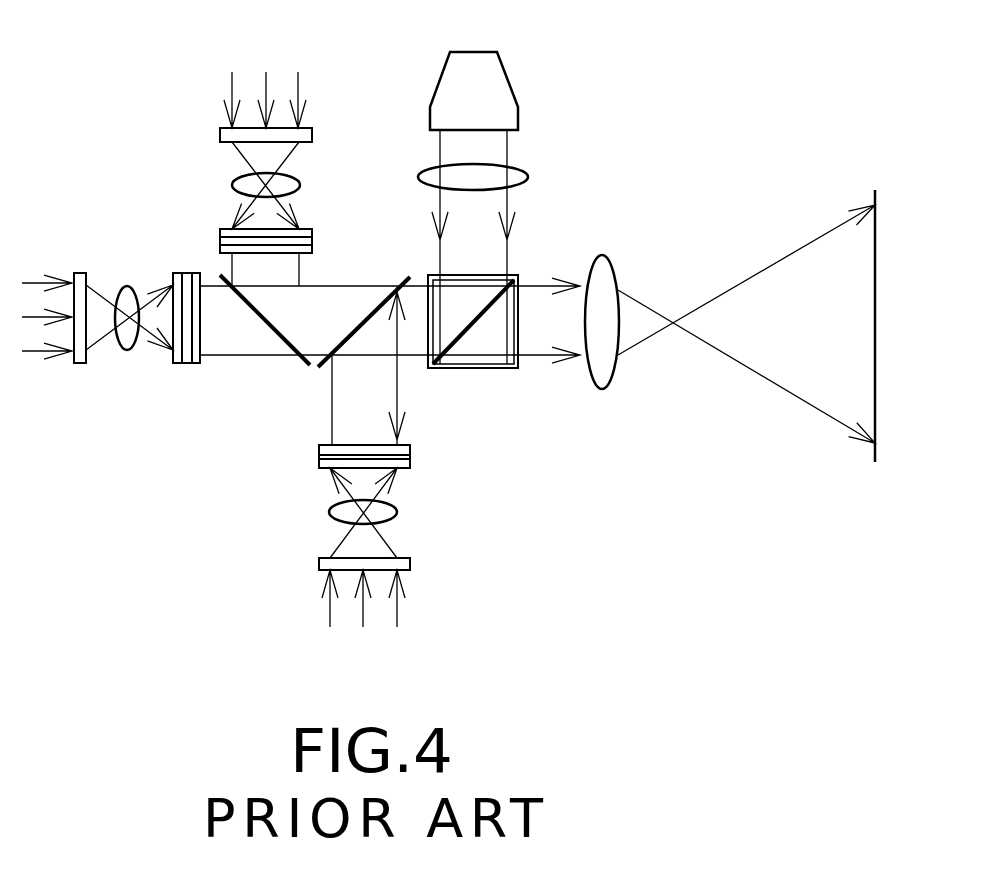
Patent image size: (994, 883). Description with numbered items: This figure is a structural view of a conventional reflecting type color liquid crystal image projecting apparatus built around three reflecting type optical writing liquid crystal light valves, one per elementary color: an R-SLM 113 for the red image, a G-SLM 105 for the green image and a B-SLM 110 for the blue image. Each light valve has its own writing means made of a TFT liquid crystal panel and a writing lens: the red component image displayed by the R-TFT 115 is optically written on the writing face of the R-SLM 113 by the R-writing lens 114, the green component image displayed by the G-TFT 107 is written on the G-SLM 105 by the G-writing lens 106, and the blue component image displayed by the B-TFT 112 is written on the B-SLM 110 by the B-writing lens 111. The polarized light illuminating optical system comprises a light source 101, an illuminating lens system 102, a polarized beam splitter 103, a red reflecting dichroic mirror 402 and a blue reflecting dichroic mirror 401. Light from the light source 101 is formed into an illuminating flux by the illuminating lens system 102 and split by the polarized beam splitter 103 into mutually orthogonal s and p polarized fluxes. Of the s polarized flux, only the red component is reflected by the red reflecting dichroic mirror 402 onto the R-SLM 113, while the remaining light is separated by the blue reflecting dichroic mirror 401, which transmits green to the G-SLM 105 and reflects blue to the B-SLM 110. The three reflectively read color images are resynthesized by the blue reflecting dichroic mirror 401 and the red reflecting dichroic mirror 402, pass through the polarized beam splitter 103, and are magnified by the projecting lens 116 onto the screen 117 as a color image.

The light source 101 is at (507, 88).
The illuminating lens system 102 is at (530, 168).
The polarized beam splitter 103 is at (513, 273).
The G-SLM (reflecting type optical writing liquid crystal light valve for green) 105 is at (178, 272).
The G-writing lens 106 is at (130, 350).
The G-TFT (TFT liquid crystal panel for green) 107 is at (80, 368).
The B-SLM (reflecting type optical writing liquid crystal light valve for blue) 110 is at (220, 233).
The B-writing lens 111 is at (232, 183).
The B-TFT (TFT liquid crystal panel for blue) 112 is at (220, 130).
The R-SLM (reflecting type optical writing liquid crystal light valve for red) 113 is at (412, 453).
The R-writing lens 114 is at (397, 505).
The R-TFT (TFT liquid crystal panel for red) 115 is at (410, 560).
The projecting lens 116 is at (610, 392).
The screen 117 is at (875, 462).
The blue reflecting dichroic mirror (B-DM) 401 is at (305, 362).
The red reflecting dichroic mirror (R-DM) 402 is at (392, 278).